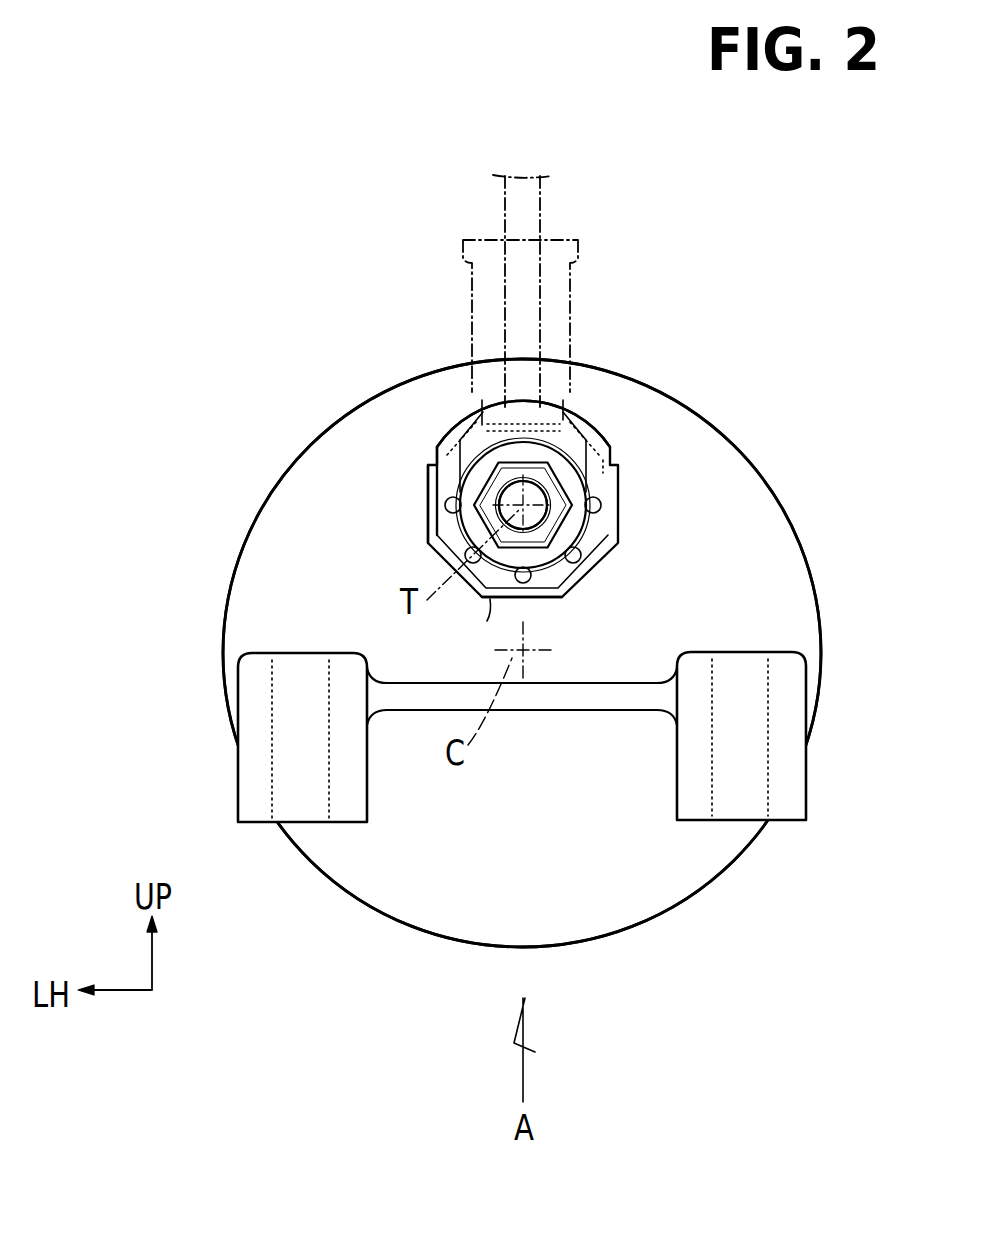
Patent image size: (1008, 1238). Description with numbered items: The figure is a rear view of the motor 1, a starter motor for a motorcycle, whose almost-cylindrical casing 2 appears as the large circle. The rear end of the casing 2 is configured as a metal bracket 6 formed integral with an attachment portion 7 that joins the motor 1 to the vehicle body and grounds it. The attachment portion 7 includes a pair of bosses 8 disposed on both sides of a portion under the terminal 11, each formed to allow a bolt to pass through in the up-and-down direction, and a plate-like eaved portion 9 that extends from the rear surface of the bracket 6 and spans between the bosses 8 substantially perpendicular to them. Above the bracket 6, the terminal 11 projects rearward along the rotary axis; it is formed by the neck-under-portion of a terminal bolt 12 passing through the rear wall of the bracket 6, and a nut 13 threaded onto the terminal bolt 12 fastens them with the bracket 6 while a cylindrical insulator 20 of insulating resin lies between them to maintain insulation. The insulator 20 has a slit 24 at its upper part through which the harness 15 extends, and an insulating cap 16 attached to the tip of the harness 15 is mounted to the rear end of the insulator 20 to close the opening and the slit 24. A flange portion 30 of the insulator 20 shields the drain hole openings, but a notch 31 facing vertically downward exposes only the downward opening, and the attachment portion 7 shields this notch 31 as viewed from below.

The motor 1 is at (312, 287).
The casing 2 is at (293, 452).
The bracket 6 is at (300, 457).
The attachment portion 7 is at (524, 694).
The bosses 8 is at (238, 687).
The eaved portion 9 is at (600, 712).
The terminal 11 is at (542, 515).
The terminal bolt 12 is at (542, 515).
The nut 13 is at (566, 503).
The harness 15 is at (542, 206).
The insulating cap 16 is at (572, 303).
The insulator 20 is at (523, 489).
The slit 24 is at (553, 400).
The flange portion 30 is at (428, 494).
The notch 31 is at (490, 600).